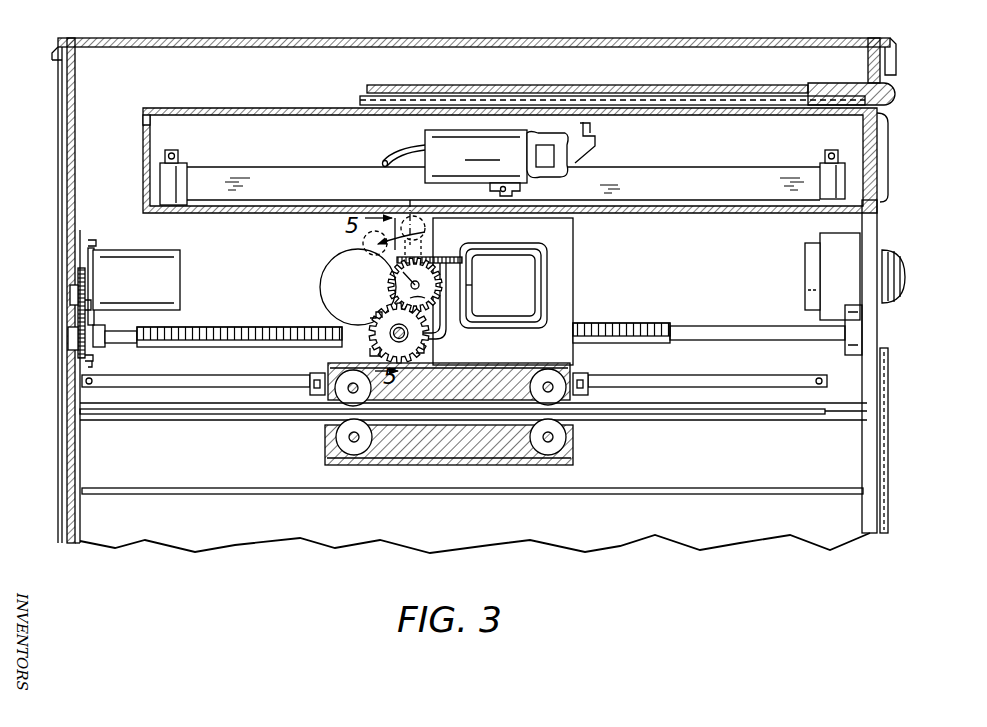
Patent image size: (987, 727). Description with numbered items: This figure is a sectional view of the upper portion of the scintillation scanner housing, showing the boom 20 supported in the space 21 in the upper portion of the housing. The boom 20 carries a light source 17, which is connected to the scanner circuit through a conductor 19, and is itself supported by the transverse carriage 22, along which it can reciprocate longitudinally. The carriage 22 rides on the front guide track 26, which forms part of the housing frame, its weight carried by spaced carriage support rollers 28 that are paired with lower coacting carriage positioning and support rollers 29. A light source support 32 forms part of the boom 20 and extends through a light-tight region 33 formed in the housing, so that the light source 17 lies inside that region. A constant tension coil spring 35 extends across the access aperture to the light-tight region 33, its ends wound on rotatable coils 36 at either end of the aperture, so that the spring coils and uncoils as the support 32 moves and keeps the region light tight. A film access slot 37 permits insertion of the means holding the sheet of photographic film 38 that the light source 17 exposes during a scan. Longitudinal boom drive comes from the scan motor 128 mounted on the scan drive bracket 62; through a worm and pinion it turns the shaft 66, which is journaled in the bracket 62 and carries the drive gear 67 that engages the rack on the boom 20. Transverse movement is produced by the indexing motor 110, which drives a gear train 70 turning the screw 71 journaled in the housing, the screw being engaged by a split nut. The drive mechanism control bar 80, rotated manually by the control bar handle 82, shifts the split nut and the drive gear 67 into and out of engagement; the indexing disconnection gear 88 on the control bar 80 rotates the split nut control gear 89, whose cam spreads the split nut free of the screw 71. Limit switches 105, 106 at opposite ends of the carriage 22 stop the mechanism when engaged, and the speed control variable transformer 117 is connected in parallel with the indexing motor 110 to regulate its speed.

The light source 17 is at (430, 137).
The conductor 19 is at (395, 148).
The boom 20 is at (545, 290).
The space 21 is at (474, 295).
The transverse carriage 22 is at (573, 262).
The front guide track 26 is at (652, 412).
The carriage support rollers 28 is at (345, 393).
The carriage positioning and support rollers 29 is at (338, 437).
The light source support 32 is at (520, 190).
The light-tight region 33 is at (515, 160).
The constant tension coil spring 35 is at (272, 160).
The rotatable coils 36 is at (186, 170).
The film access slot 37 is at (878, 90).
The sheet of photographic film 38 is at (690, 93).
The scan drive bracket 62 is at (452, 300).
The shaft 66 is at (468, 252).
The drive gear 67 is at (438, 257).
The gear train 70 is at (80, 278).
The screw 71 is at (160, 347).
The drive mechanism control bar 80 is at (410, 286).
The control bar handle 82 is at (410, 200).
The indexing disconnection gear 88 is at (462, 290).
The split nut control gear 89 is at (430, 345).
The limit switch 105 is at (310, 378).
The limit switch 106 is at (585, 380).
The indexing motor 110 is at (180, 277).
The speed control variable transformer 117 is at (905, 274).
The scan motor 128 is at (320, 268).